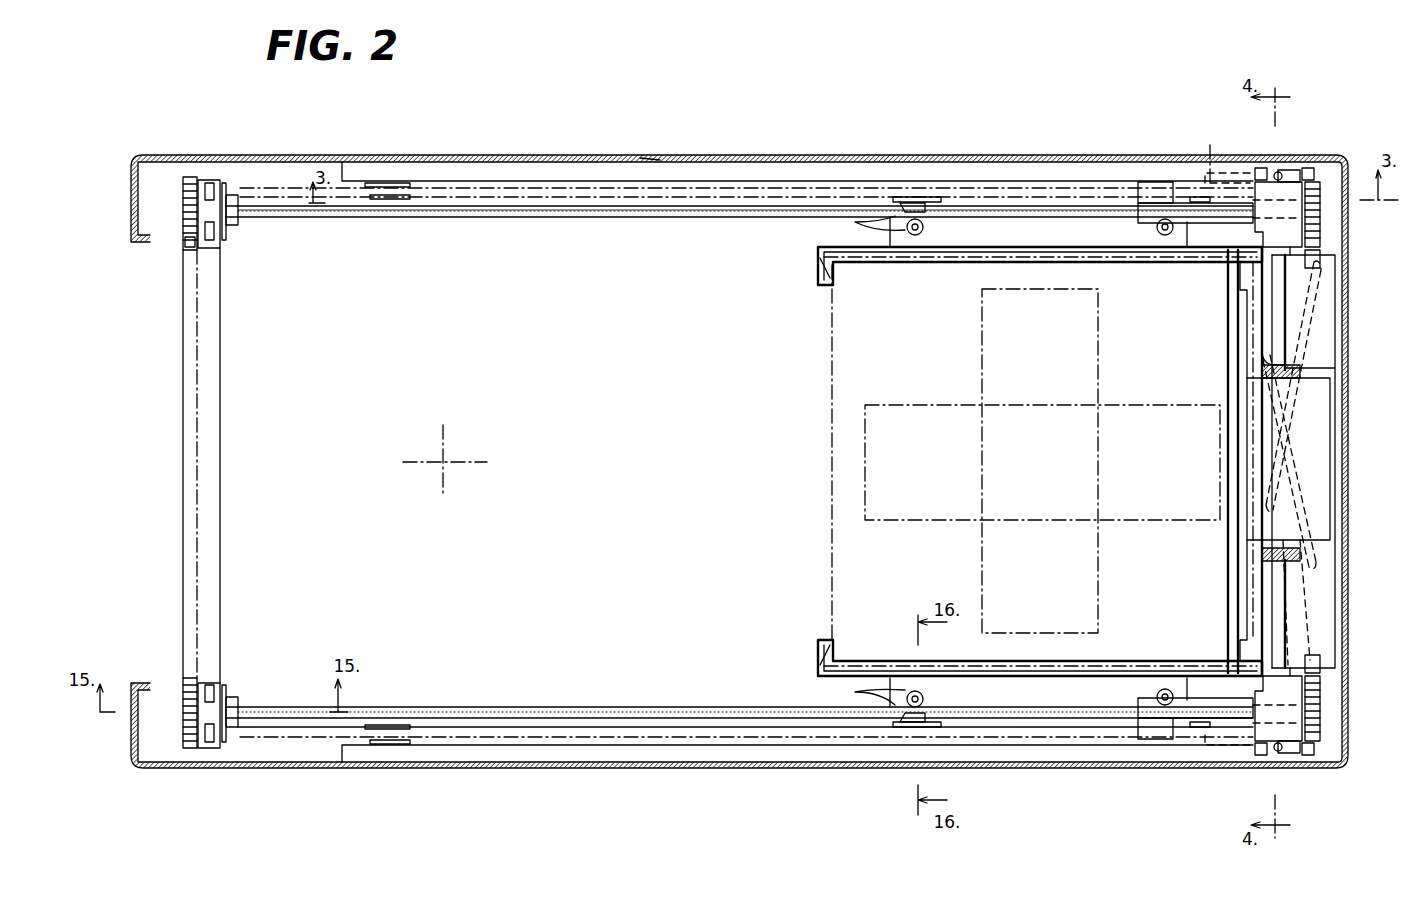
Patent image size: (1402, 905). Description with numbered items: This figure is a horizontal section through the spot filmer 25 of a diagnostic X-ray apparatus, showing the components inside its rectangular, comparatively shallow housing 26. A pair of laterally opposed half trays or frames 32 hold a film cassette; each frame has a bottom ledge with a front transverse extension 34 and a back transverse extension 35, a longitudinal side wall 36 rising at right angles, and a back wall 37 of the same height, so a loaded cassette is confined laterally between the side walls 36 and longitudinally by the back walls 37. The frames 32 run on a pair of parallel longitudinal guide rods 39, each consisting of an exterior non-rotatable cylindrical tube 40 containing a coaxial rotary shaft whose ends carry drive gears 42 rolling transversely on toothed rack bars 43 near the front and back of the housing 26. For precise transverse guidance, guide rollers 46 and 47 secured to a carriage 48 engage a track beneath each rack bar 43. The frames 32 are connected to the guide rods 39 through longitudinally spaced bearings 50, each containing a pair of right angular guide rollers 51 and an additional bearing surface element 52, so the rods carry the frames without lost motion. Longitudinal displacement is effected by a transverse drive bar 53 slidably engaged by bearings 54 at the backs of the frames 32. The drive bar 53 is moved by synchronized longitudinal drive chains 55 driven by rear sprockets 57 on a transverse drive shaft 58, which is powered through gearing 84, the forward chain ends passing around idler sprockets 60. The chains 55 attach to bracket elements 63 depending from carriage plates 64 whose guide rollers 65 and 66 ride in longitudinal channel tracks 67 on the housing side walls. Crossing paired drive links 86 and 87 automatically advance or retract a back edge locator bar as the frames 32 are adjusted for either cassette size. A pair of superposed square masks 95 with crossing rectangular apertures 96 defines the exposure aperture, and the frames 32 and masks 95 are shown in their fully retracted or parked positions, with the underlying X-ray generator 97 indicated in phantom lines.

The spot filmer 25 is at (653, 157).
The housing 26 is at (516, 155).
The half trays 32 is at (910, 266).
The front transverse extension 34 is at (835, 280).
The back transverse extension 35 is at (1243, 282).
The longitudinal side wall 36 is at (1116, 262).
The back wall 37 is at (1252, 312).
The guide rods 39 is at (653, 222).
The cylindrical tube 40 is at (548, 209).
The drive gears 42 is at (188, 205).
The rack bars 43 is at (188, 245).
The guide rollers 46 is at (210, 182).
The guide rollers 47 is at (232, 200).
The carriage 48 is at (232, 222).
The bearings 50 is at (925, 197).
The guide rollers 51 is at (1165, 688).
The bearing surface element 52 is at (908, 197).
The drive bar 53 is at (1290, 305).
The bearings 54 is at (1300, 372).
The drive chains 55 is at (455, 198).
The rear sprockets 57 is at (1225, 175).
The transverse drive shaft 58 is at (1226, 358).
The idler sprockets 60 is at (398, 200).
The bracket elements 63 is at (1158, 182).
The carriage plates 64 is at (1312, 170).
The guide rollers 65 is at (1290, 170).
The guide rollers 66 is at (1280, 170).
The channel tracks 67 is at (792, 170).
The gearing 84 is at (1230, 146).
The drive links 86 is at (1300, 330).
The drive links 87 is at (1312, 520).
The masks 95 is at (830, 372).
The rectangular apertures 96 is at (950, 405).
The X-ray generator 97 is at (445, 465).